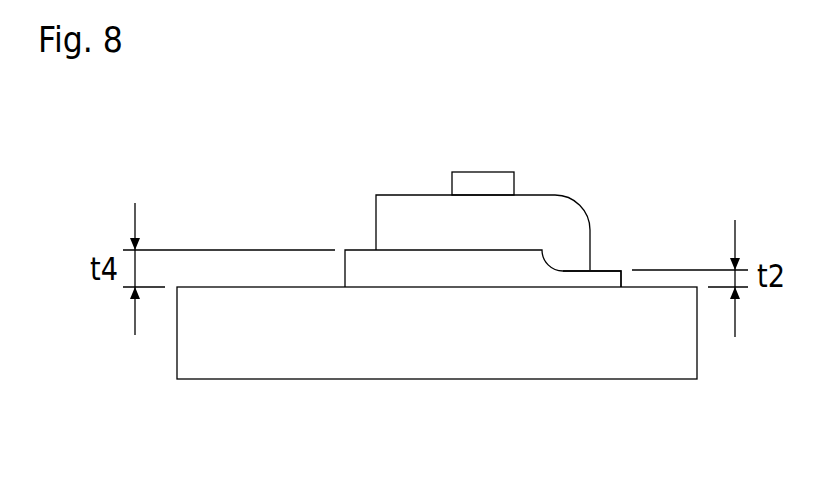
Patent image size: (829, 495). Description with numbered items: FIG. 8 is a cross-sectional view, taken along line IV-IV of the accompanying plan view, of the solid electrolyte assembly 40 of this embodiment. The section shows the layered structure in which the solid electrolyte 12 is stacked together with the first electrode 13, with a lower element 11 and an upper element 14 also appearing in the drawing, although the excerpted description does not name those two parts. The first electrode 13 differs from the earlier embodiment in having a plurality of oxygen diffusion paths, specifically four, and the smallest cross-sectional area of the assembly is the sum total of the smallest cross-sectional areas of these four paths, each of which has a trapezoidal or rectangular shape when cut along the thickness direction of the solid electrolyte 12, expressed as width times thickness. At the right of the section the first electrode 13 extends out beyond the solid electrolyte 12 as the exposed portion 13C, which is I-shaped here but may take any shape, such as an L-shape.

The solid electrolyte assembly 40 is at (650, 131).
The substrate 11 is at (690, 368).
The solid electrolyte 12 is at (382, 218).
The first electrode 13 is at (473, 277).
The exposed portion 13C is at (607, 275).
The top electrode 14 is at (493, 172).